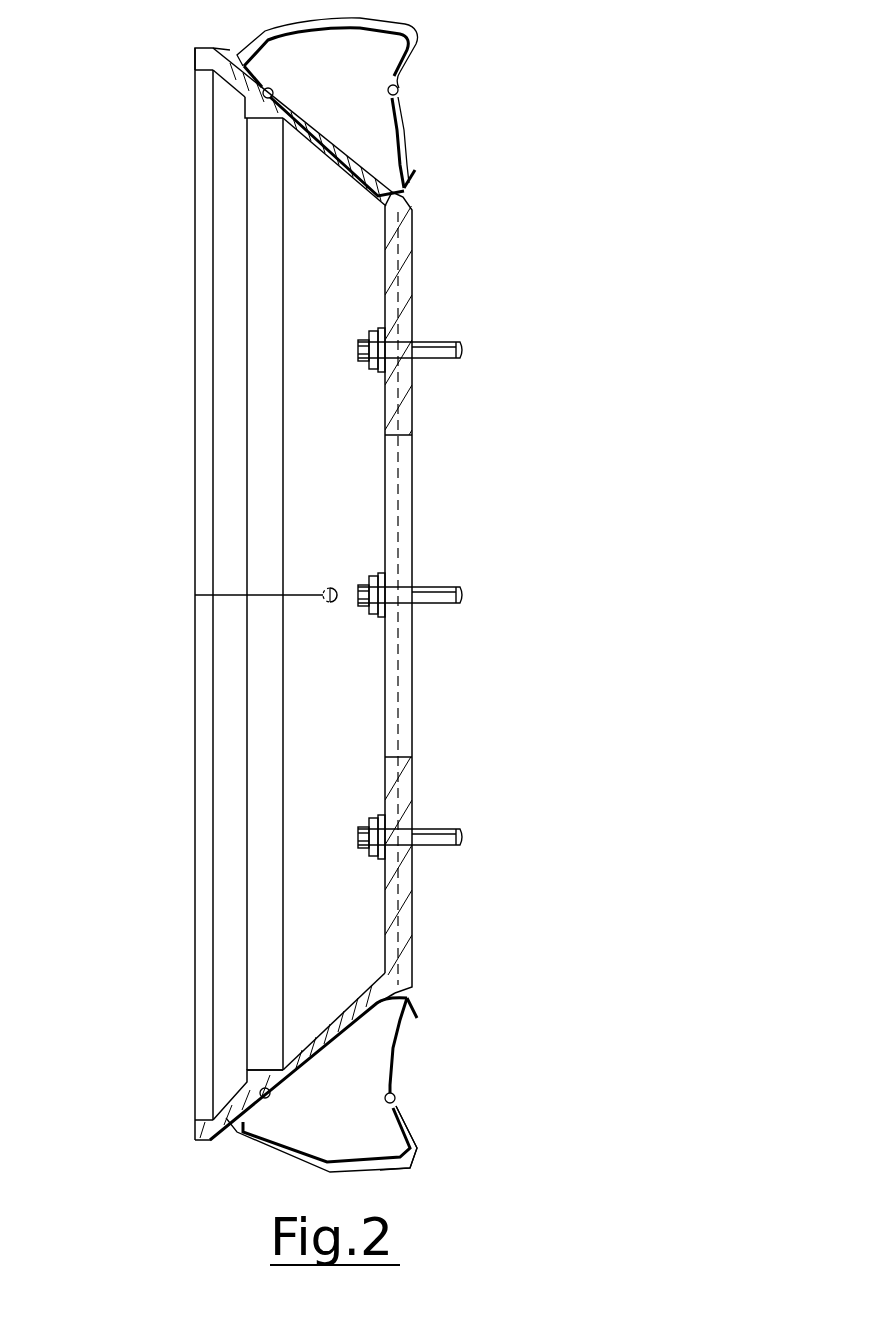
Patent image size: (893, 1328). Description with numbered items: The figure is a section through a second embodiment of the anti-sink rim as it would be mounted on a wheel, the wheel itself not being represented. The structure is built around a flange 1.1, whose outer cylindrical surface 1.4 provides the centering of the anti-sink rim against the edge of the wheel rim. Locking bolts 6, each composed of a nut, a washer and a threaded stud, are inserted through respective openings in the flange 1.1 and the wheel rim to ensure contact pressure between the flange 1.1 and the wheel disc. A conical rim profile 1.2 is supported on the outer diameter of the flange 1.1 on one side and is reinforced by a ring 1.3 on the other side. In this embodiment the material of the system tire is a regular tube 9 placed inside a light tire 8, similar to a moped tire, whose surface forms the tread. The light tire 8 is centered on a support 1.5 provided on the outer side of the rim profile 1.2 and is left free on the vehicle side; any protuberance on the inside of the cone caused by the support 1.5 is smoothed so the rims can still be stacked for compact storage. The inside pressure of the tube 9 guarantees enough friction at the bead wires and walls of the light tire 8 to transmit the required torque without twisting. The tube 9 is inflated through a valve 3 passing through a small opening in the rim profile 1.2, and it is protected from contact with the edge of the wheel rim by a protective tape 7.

The flange 1.1 is at (390, 287).
The conical rim profile 1.2 is at (340, 165).
The reinforcing ring 1.3 is at (205, 62).
The flange outer cylindrical surface 1.4 is at (390, 205).
The support 1.5 is at (260, 104).
The valve 3 is at (328, 600).
The locking bolts 6 is at (405, 349).
The protective tape 7 is at (412, 1008).
The light tire 8 is at (415, 1148).
The regular tube 9 is at (393, 1048).